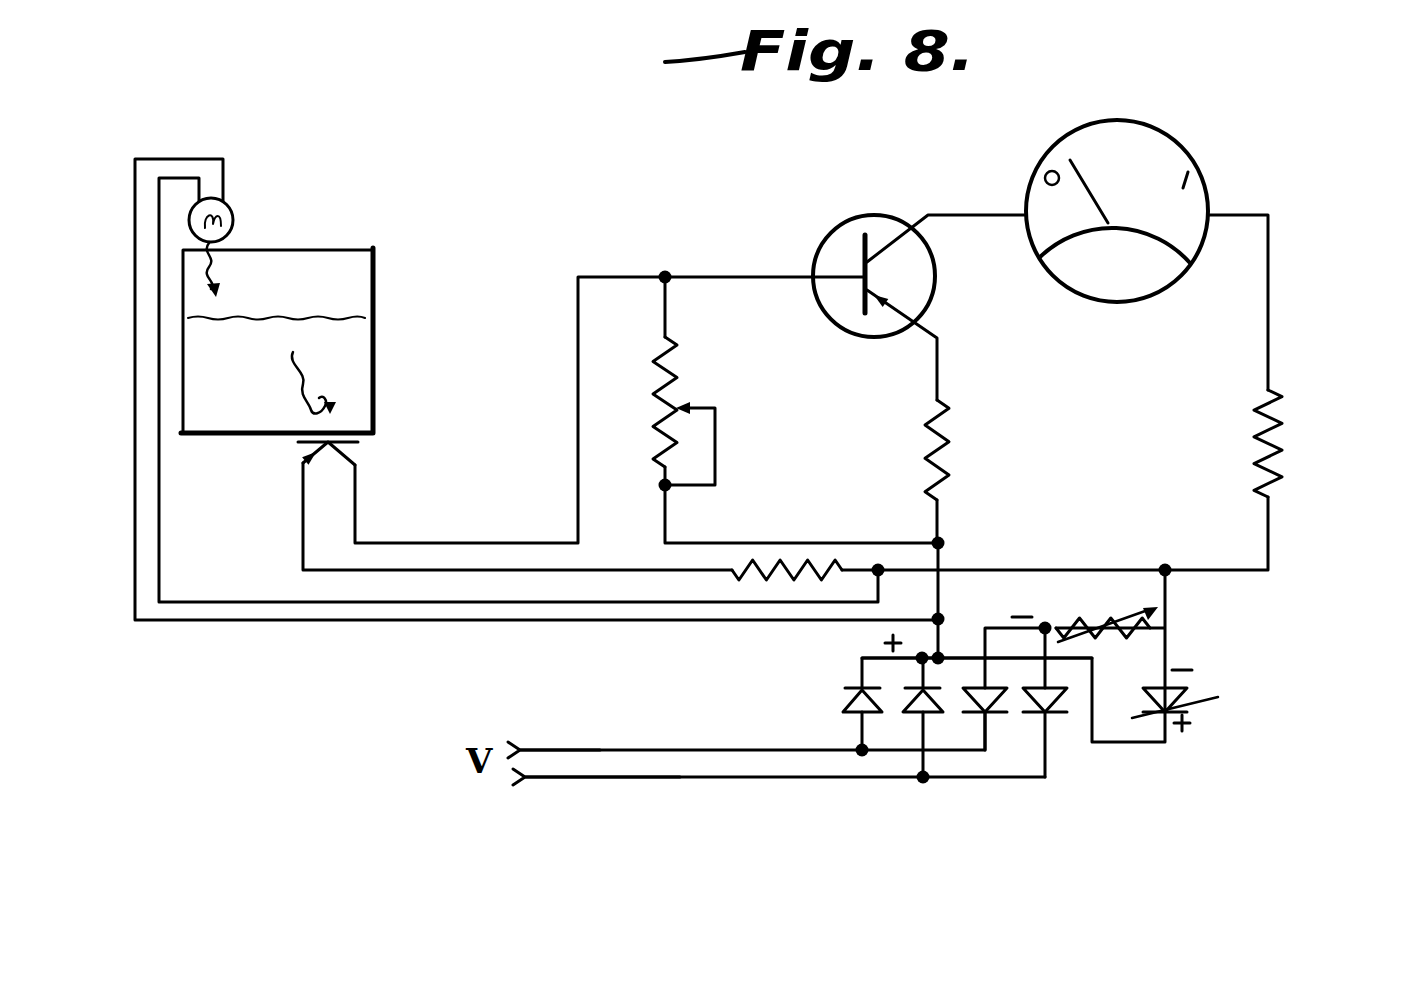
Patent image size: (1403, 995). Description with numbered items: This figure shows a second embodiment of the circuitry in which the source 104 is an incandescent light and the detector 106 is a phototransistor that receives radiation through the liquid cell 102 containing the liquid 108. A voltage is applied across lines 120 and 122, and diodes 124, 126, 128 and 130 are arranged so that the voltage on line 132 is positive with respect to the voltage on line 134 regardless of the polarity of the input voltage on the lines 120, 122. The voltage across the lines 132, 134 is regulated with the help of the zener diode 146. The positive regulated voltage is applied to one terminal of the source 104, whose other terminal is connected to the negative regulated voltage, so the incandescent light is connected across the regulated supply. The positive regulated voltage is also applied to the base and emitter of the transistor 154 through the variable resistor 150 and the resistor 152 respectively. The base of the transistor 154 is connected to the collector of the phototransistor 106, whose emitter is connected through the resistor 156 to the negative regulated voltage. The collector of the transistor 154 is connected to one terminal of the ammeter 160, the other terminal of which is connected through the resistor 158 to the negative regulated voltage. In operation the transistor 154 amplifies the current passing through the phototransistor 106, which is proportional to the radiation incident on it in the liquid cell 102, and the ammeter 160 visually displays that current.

The liquid cell 102 is at (374, 310).
The source 104 is at (233, 221).
The detector 106 is at (365, 452).
The liquid 108 is at (235, 320).
The line 120 is at (607, 752).
The line 122 is at (681, 778).
The diode 124 is at (845, 702).
The diode 126 is at (903, 703).
The diode 128 is at (973, 697).
The diode 130 is at (1067, 697).
The line 132 is at (955, 657).
The line 134 is at (997, 627).
The zener diode 146 is at (1180, 690).
The variable resistor 150 is at (670, 386).
The resistor 152 is at (949, 455).
The transistor 154 is at (936, 290).
The resistor 156 is at (774, 562).
The resistor 158 is at (1282, 432).
The ammeter 160 is at (1183, 146).